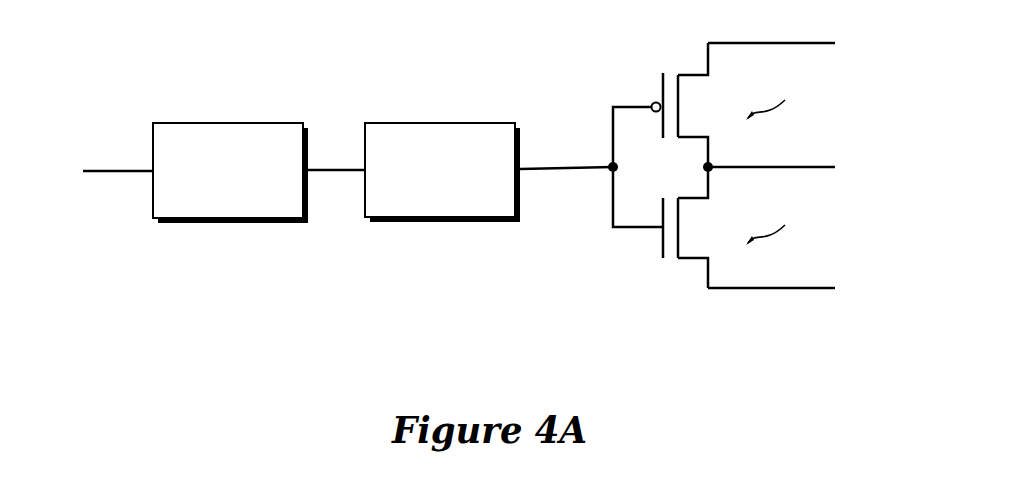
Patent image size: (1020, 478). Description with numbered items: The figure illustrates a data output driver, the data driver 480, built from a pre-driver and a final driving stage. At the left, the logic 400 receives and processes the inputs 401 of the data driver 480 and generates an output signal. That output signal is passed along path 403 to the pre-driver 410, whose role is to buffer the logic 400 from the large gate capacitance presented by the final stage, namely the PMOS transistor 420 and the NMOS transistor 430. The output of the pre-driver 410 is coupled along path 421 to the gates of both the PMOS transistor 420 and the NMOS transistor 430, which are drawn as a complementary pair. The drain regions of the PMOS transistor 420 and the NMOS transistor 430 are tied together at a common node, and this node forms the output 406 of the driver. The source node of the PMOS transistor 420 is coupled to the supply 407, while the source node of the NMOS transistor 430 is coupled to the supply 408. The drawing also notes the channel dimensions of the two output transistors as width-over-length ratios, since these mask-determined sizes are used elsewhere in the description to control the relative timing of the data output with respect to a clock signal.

The logic 400 is at (297, 216).
The inputs 401 is at (87, 176).
The path 403 is at (345, 157).
The output 406 is at (804, 166).
The supply 407 is at (805, 45).
The supply 408 is at (808, 290).
The pre-driver 410 is at (508, 216).
The PMOS transistor 420 is at (727, 116).
The path 421 is at (580, 156).
The NMOS transistor 430 is at (727, 238).
The data driver 480 is at (345, 285).